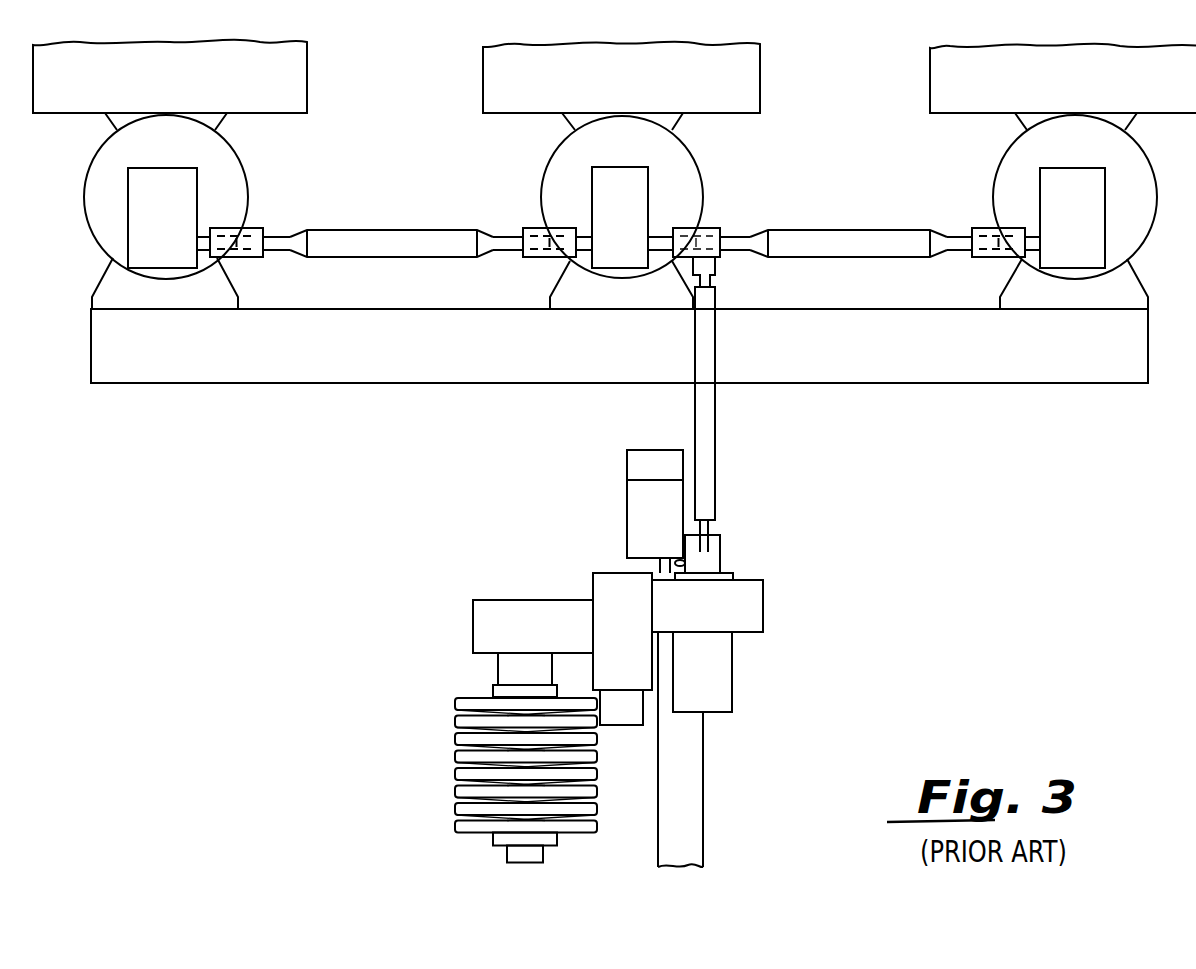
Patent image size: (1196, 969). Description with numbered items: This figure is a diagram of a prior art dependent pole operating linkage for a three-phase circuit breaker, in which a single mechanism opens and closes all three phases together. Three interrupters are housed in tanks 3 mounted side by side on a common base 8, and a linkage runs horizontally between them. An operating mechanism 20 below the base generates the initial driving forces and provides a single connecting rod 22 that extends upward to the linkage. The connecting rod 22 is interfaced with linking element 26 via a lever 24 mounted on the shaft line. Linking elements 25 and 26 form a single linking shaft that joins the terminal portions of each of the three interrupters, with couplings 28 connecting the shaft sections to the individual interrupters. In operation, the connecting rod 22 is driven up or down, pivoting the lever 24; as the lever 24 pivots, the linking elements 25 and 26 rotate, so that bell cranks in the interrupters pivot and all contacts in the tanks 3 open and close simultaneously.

The tank 3 is at (103, 188).
The base frame 8 is at (492, 277).
The operating mechanism 20 is at (757, 547).
The connecting rod 22 is at (712, 435).
The lever 24 is at (715, 228).
The linking element 25 is at (408, 237).
The linking element 26 is at (830, 236).
The coupling 28 is at (248, 228).